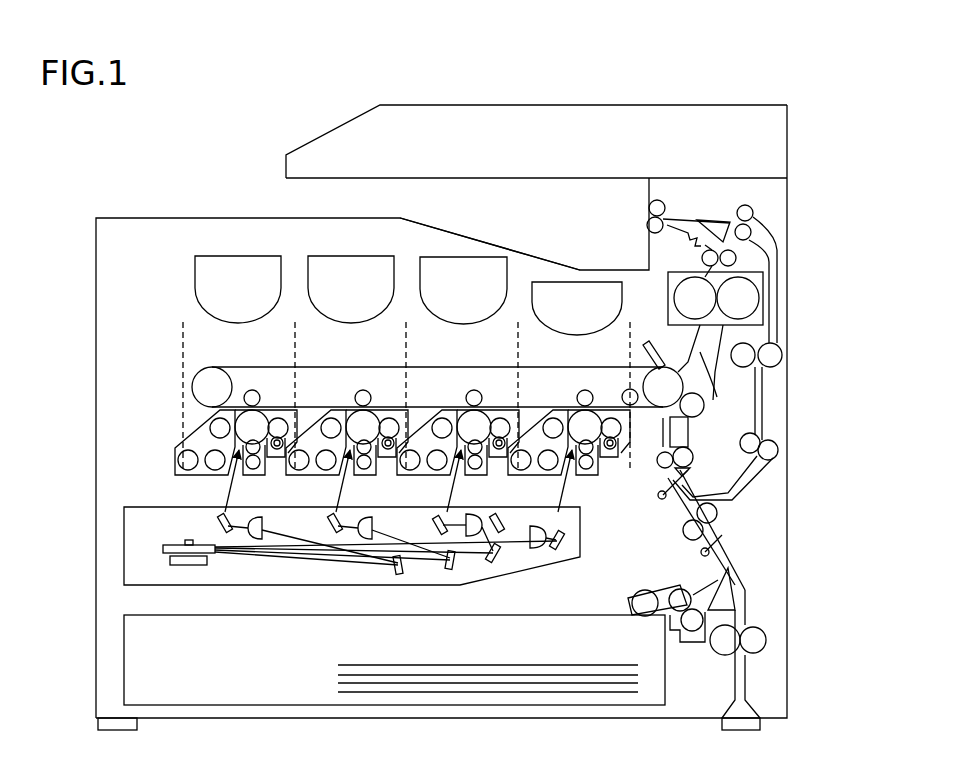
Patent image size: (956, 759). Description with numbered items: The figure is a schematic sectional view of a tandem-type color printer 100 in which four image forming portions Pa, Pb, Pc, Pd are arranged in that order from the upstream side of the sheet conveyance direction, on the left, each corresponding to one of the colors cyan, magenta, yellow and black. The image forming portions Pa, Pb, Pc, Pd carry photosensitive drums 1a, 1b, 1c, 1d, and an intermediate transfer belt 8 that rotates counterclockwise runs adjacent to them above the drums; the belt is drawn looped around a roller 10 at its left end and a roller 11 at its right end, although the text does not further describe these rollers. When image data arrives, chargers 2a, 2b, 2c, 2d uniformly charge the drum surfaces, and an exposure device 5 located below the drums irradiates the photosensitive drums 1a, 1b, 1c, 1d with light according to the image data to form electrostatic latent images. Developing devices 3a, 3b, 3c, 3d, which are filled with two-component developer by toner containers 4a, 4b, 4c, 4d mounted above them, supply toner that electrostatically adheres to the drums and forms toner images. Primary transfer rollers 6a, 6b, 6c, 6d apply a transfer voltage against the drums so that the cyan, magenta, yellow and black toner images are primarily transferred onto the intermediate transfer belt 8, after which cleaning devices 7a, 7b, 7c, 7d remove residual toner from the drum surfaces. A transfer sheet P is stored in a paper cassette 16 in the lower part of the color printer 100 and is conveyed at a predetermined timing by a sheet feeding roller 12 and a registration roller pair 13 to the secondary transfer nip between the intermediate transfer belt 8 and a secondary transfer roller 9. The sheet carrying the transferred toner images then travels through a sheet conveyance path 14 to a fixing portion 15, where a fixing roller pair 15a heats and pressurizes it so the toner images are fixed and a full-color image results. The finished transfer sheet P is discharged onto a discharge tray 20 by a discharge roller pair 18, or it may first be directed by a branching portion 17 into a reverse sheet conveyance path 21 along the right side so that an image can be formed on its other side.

The color printer 100 is at (205, 187).
The photosensitive drum 1a is at (252, 427).
The photosensitive drum 1b is at (363, 427).
The photosensitive drum 1c is at (474, 427).
The photosensitive drum 1d is at (585, 427).
The charger 2a is at (255, 465).
The charger 2b is at (366, 465).
The charger 2c is at (477, 465).
The charger 2d is at (588, 465).
The developing device 3a is at (178, 453).
The developing device 3b is at (323, 418).
The developing device 3c is at (434, 418).
The developing device 3d is at (544, 418).
The toner container 4a is at (238, 289).
The toner container 4b is at (351, 289).
The toner container 4c is at (463, 290).
The toner container 4d is at (577, 308).
The exposure device 5 is at (124, 540).
The primary transfer roller 6a is at (256, 398).
The primary transfer roller 6b is at (367, 397).
The primary transfer roller 6c is at (480, 397).
The primary transfer roller 6d is at (591, 397).
The cleaning device 7a is at (283, 447).
The cleaning device 7b is at (394, 447).
The cleaning device 7c is at (505, 447).
The cleaning device 7d is at (617, 448).
The intermediate transfer belt 8 is at (237, 367).
The secondary transfer roller 9 is at (703, 417).
The drive roller 10 is at (205, 385).
The secondary transfer inner roller 11 is at (666, 378).
The sheet feeding roller 12 is at (643, 603).
The registration roller pair 13 is at (677, 477).
The sheet conveyance path 14 is at (703, 358).
The fixing portion 15 is at (766, 290).
The fixing roller pair 15a is at (745, 299).
The paper cassette 16 is at (124, 655).
The branching portion 17 is at (755, 213).
The discharge roller pair 18 is at (648, 208).
The discharge tray 20 is at (510, 248).
The reverse sheet conveyance path 21 is at (766, 383).
The transfer sheet P is at (418, 670).
The image forming portion Pa is at (187, 347).
The image forming portion Pb is at (299, 347).
The image forming portion Pc is at (410, 347).
The image forming portion Pd is at (522, 347).